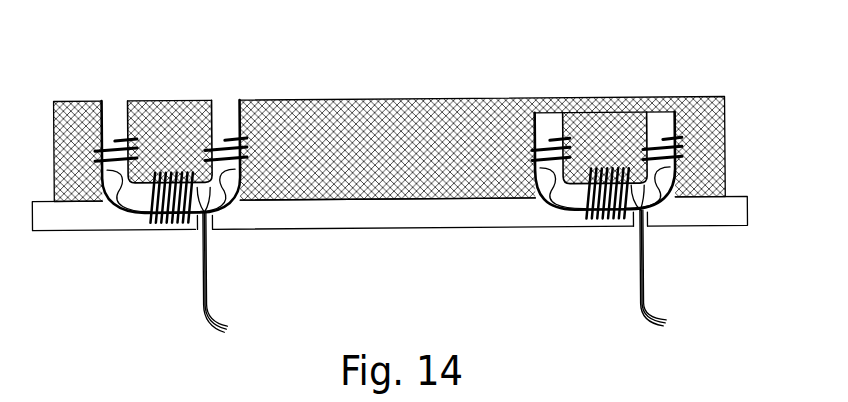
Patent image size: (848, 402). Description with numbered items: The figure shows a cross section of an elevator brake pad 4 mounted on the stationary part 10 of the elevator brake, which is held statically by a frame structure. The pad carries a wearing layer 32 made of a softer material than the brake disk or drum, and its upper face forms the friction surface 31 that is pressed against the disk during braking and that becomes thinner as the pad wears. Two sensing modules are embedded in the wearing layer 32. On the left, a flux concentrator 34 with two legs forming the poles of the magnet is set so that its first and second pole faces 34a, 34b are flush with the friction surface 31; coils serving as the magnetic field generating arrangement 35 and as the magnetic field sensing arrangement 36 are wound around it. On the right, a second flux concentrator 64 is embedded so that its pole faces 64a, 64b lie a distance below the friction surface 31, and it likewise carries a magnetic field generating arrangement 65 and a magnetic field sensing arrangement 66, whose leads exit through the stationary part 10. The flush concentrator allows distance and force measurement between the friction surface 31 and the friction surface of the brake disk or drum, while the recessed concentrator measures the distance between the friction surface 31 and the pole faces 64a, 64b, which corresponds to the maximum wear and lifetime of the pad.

The elevator brake pad 4 is at (755, 211).
The other part of the elevator brake 10 is at (87, 210).
The friction surface of the elevator brake pad 31 is at (709, 94).
The wearing layer 32 is at (707, 150).
The flux concentrator 34 is at (232, 205).
The first pole face 34a is at (112, 94).
The second pole face 34b is at (222, 94).
The magnetic field generating arrangement 35 is at (177, 228).
The magnetic field sensing arrangement 36 is at (115, 203).
The flux concentrator 64 is at (653, 199).
The first pole face 64a is at (547, 113).
The second pole face 64b is at (658, 113).
The magnetic field generating arrangement 65 is at (615, 222).
The magnetic field sensing arrangement 66 is at (690, 179).